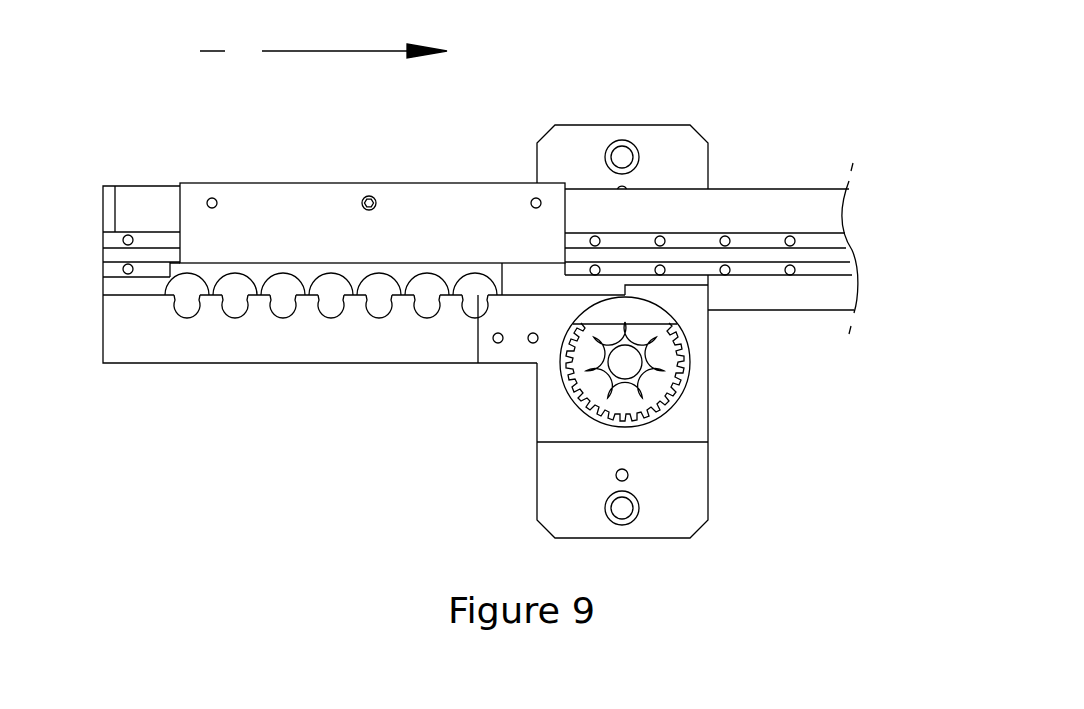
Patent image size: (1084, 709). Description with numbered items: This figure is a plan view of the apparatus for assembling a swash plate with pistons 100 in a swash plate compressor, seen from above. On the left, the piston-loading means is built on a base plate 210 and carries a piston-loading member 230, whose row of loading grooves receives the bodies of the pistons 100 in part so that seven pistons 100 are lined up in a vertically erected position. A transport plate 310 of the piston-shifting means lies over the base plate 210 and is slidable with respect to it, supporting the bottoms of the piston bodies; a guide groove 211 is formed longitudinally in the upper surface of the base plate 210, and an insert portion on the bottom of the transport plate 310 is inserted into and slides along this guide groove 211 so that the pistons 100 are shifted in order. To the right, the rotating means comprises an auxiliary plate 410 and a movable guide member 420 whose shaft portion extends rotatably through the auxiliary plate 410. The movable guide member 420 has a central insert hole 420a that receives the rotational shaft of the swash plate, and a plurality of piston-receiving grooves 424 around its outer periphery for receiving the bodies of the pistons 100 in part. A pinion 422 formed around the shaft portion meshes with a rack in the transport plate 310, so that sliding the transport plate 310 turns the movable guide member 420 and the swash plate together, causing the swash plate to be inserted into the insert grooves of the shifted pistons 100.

The piston 100 is at (185, 303).
The piston-loading member 230 is at (220, 278).
The transport plate 310 is at (392, 204).
The base plate 210 is at (752, 212).
The guide groove 211 is at (813, 257).
The auxiliary plate 410 is at (678, 483).
The movable guide member 420 is at (610, 388).
The insert hole 420a is at (630, 358).
The pinion 422 is at (683, 398).
The piston-receiving grooves 424 is at (573, 350).